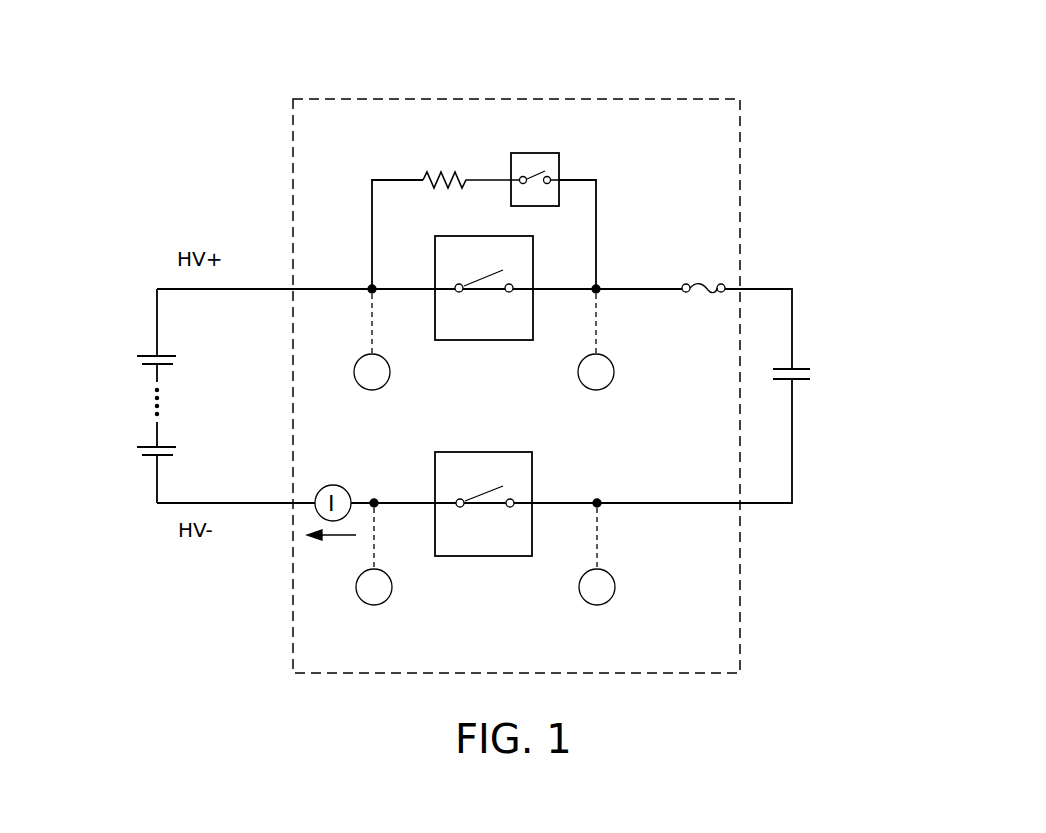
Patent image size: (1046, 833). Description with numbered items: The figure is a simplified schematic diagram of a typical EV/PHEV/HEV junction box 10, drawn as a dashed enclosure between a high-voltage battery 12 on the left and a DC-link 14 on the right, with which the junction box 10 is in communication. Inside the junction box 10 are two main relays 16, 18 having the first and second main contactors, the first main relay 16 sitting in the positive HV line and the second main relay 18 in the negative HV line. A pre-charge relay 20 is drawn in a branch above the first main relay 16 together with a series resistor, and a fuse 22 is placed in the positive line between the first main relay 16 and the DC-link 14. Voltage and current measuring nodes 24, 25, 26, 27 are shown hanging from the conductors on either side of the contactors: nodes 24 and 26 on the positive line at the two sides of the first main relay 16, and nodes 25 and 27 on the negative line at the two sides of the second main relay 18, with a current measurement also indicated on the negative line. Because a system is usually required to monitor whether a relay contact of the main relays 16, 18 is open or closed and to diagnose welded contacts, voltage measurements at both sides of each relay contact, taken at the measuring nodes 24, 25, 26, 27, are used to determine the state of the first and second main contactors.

The junction box 10 is at (694, 99).
The high-voltage battery 12 is at (108, 298).
The DC-link 14 is at (815, 348).
The main relay 16 is at (485, 340).
The main relay 18 is at (480, 556).
The pre-charge relay 20 is at (559, 165).
The fuse 22 is at (712, 272).
The voltage and current measuring node 24 is at (390, 375).
The voltage and current measuring node 25 is at (392, 588).
The voltage and current measuring node 26 is at (614, 372).
The voltage and current measuring node 27 is at (615, 587).